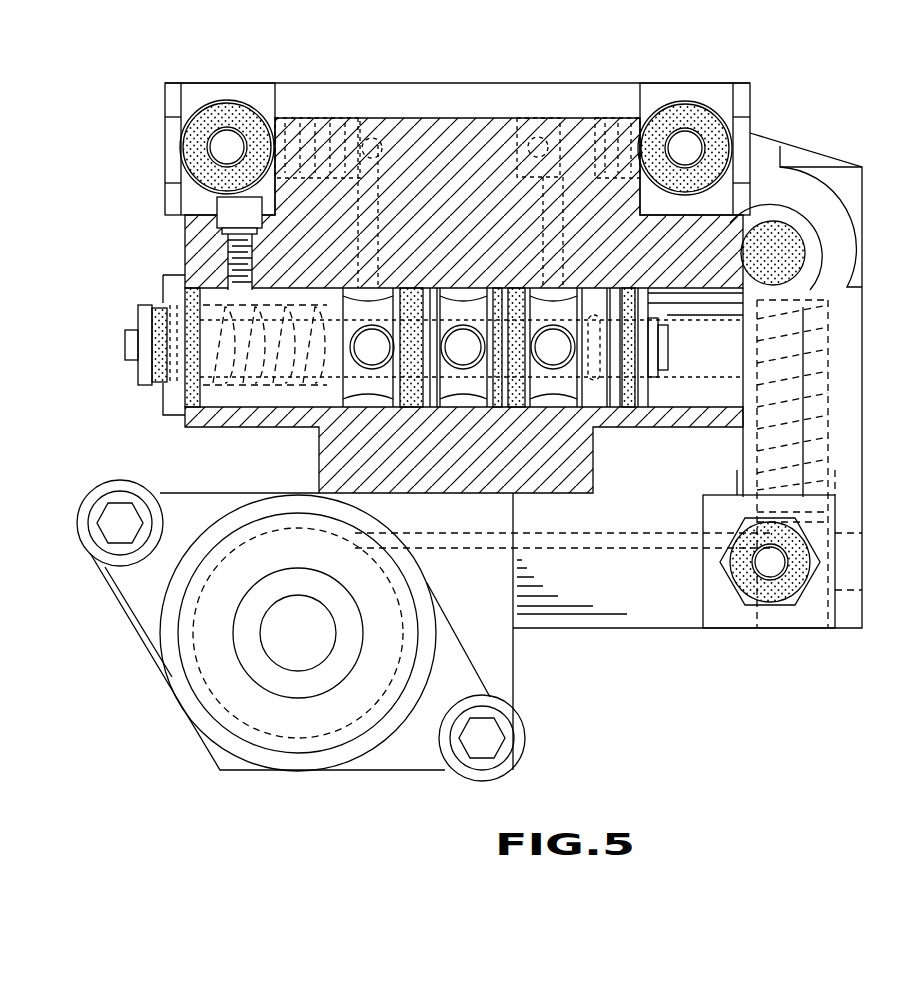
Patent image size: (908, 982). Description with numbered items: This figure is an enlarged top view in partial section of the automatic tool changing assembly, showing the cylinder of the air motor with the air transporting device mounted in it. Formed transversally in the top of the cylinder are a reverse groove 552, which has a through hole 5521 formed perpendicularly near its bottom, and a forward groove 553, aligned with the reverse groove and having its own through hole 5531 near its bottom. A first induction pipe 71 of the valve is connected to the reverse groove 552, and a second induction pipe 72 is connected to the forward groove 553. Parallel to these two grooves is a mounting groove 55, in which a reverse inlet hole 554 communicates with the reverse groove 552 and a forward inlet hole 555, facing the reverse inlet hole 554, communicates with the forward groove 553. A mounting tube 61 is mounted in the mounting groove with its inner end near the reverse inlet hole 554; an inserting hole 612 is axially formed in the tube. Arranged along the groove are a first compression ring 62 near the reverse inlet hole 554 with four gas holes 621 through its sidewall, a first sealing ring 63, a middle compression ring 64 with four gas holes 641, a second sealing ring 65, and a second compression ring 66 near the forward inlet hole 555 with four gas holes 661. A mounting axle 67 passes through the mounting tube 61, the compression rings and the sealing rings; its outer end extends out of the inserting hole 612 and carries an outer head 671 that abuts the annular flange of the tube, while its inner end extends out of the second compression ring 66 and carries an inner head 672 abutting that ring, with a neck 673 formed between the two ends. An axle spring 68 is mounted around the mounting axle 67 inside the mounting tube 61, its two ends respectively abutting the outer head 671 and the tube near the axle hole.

The mounting groove 55 is at (720, 404).
The reverse groove 552 is at (343, 123).
The through hole 5521 is at (373, 140).
The forward groove 553 is at (540, 135).
The through hole 5531 is at (543, 150).
The reverse inlet hole 554 is at (370, 200).
The forward inlet hole 555 is at (545, 205).
The mounting tube 61 is at (277, 397).
The inserting hole 612 is at (205, 400).
The first compression ring 62 is at (383, 312).
The gas holes 621 is at (363, 340).
The first sealing ring 63 is at (412, 297).
The middle compression ring 64 is at (483, 377).
The gas holes 641 is at (447, 335).
The second sealing ring 65 is at (517, 392).
The second compression ring 66 is at (553, 383).
The gas holes 661 is at (545, 357).
The mounting axle 67 is at (227, 355).
The outer head 671 is at (147, 342).
The inner head 672 is at (628, 297).
The neck 673 is at (337, 373).
The axle spring 68 is at (220, 328).
The first induction pipe 71 is at (227, 147).
The second induction pipe 72 is at (685, 148).